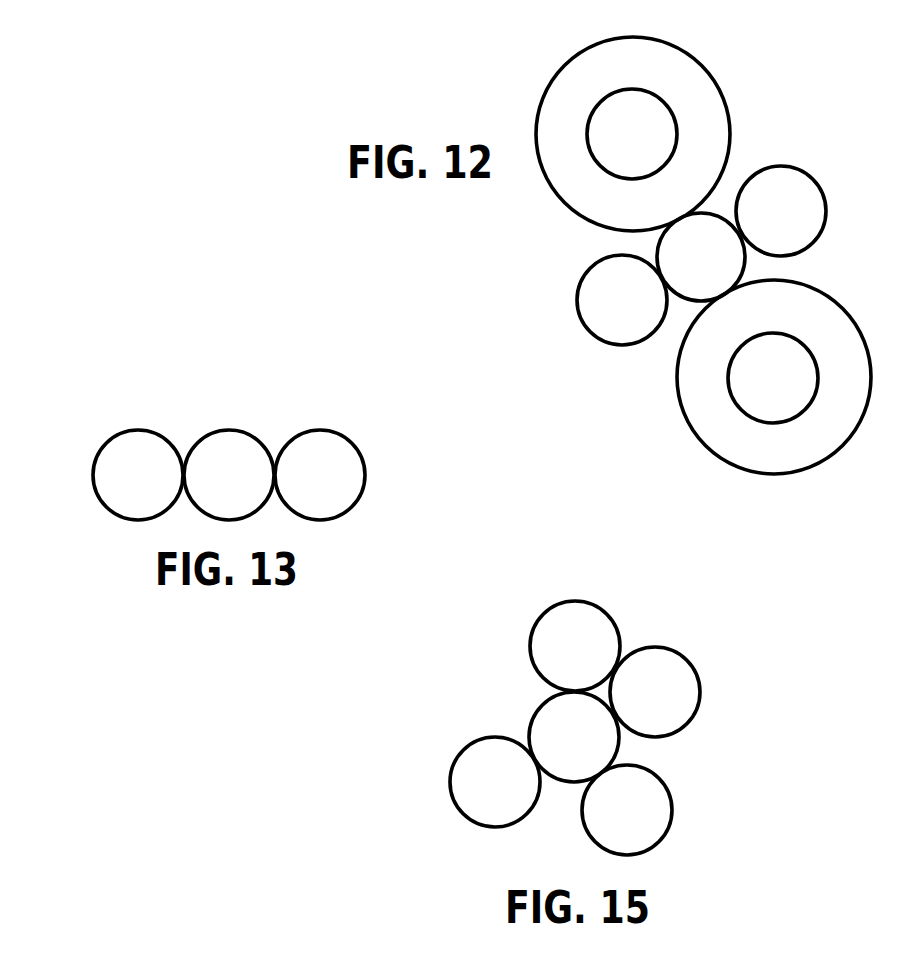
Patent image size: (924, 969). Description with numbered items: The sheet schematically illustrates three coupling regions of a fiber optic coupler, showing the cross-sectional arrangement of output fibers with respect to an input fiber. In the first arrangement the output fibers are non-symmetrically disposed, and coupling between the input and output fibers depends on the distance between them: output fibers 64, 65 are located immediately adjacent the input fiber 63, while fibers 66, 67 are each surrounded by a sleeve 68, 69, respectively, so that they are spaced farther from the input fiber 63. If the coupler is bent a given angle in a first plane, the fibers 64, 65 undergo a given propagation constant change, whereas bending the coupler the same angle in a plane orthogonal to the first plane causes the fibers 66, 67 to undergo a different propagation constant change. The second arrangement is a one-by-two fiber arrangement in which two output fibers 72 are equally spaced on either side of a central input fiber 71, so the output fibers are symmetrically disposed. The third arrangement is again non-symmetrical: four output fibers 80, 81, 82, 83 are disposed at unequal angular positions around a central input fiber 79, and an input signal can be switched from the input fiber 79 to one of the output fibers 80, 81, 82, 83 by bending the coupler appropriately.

In FIG. 12, the input fiber 63 is at (658, 252).
In FIG. 12, the output fiber 64 is at (820, 236).
In FIG. 12, the output fiber 65 is at (606, 343).
In FIG. 12, the fiber 66 is at (615, 91).
In FIG. 12, the fiber 67 is at (764, 422).
In FIG. 12, the sleeve 68 is at (722, 88).
In FIG. 12, the sleeve 69 is at (855, 432).
In FIG. 13, the input fiber 71 is at (219, 432).
In FIG. 13, the output fibers 72 is at (108, 440).
In FIG. 15, the input fiber 79 is at (537, 714).
In FIG. 15, the output fiber 80 is at (602, 609).
In FIG. 15, the output fiber 81 is at (698, 703).
In FIG. 15, the output fiber 82 is at (670, 808).
In FIG. 15, the output fiber 83 is at (452, 797).